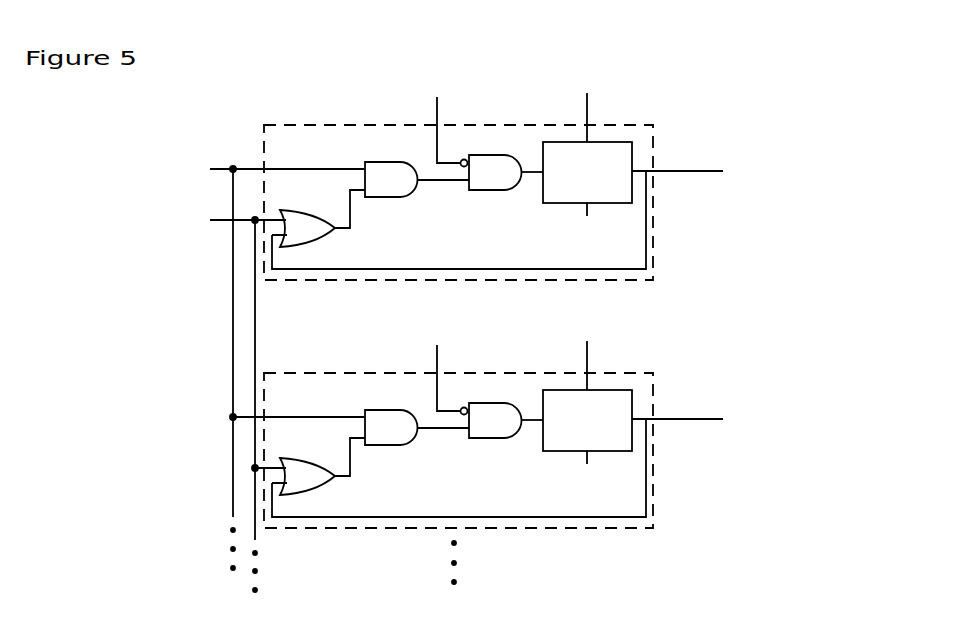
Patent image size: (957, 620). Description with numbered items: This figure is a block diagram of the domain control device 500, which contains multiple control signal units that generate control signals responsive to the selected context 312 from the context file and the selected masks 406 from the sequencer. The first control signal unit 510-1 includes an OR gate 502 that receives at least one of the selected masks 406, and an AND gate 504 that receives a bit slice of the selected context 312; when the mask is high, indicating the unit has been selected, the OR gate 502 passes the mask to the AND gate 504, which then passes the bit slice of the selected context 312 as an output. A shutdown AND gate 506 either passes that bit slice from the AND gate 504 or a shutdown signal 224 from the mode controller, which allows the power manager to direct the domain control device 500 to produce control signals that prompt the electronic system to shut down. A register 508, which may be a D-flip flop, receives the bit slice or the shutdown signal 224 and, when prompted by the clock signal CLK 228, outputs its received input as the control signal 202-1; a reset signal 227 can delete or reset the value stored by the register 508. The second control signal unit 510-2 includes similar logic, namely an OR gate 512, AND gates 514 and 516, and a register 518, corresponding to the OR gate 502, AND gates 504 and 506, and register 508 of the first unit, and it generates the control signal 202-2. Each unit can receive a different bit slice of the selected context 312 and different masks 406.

The domain control device 500 is at (740, 64).
The selected context 312 is at (214, 355).
The selected masks 406 is at (181, 396).
The OR gate 502 is at (323, 238).
The AND gate 504 is at (404, 189).
The shutdown AND gate 506 is at (510, 181).
The register 508 is at (627, 200).
The shutdown signal 224 is at (443, 229).
The reset signal 227 is at (586, 228).
The clock signal CLK 228 is at (590, 348).
The control signal 202-1 is at (742, 179).
The control signal unit 510-1 is at (653, 233).
The OR gate 512 is at (323, 486).
The AND gate 514 is at (404, 437).
The AND gate 516 is at (510, 429).
The register 518 is at (627, 448).
The control signal 202-2 is at (742, 427).
The control signal unit 510-2 is at (653, 481).